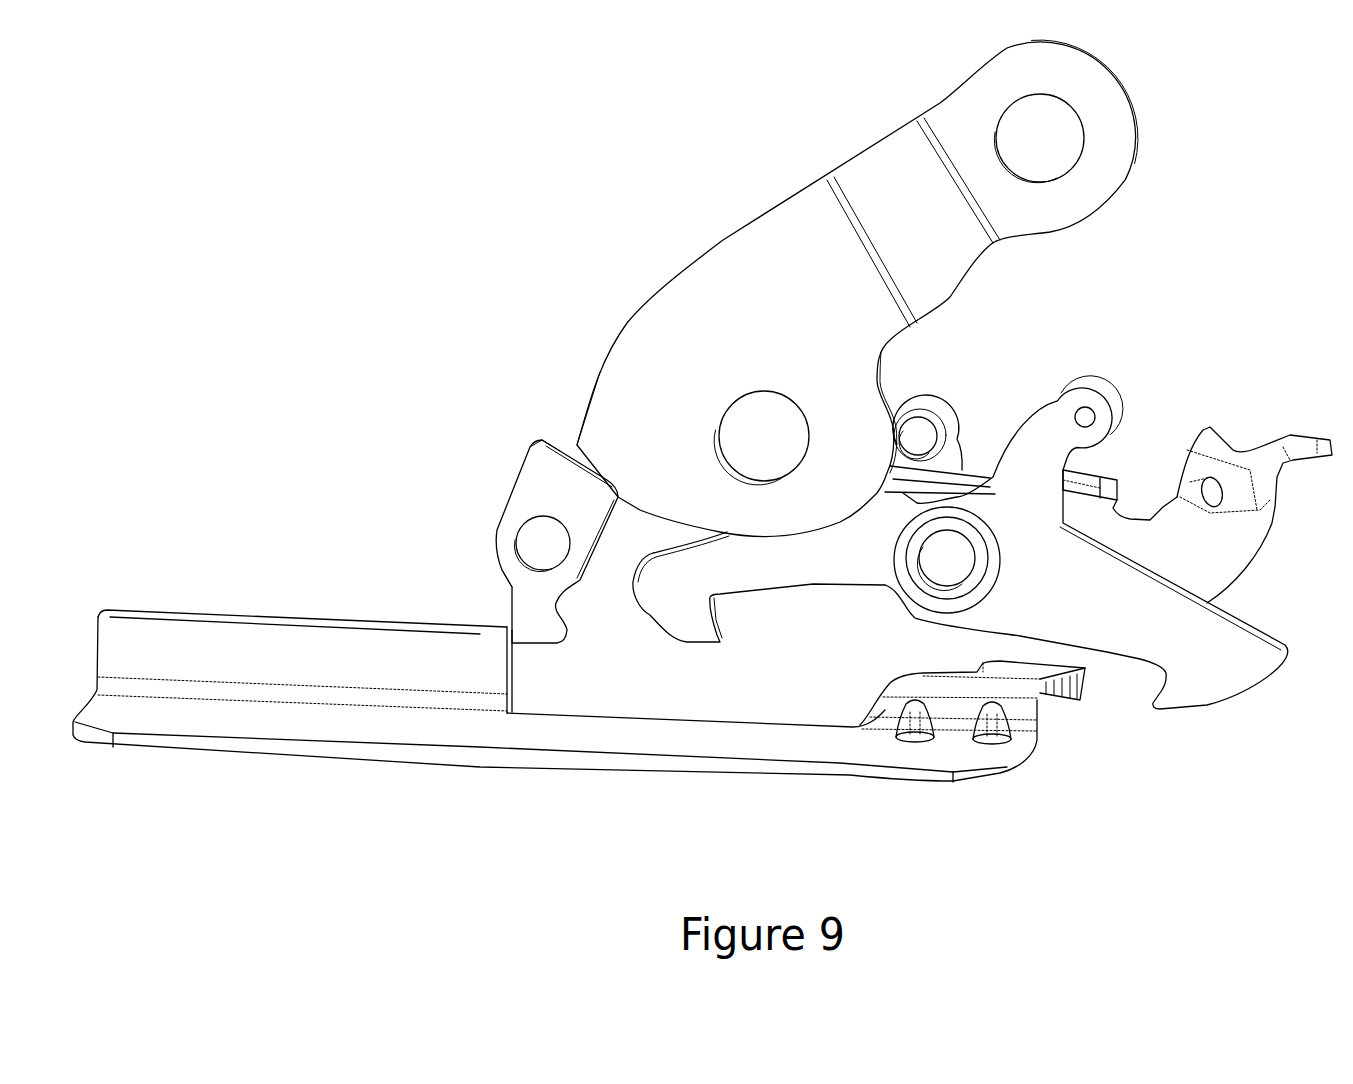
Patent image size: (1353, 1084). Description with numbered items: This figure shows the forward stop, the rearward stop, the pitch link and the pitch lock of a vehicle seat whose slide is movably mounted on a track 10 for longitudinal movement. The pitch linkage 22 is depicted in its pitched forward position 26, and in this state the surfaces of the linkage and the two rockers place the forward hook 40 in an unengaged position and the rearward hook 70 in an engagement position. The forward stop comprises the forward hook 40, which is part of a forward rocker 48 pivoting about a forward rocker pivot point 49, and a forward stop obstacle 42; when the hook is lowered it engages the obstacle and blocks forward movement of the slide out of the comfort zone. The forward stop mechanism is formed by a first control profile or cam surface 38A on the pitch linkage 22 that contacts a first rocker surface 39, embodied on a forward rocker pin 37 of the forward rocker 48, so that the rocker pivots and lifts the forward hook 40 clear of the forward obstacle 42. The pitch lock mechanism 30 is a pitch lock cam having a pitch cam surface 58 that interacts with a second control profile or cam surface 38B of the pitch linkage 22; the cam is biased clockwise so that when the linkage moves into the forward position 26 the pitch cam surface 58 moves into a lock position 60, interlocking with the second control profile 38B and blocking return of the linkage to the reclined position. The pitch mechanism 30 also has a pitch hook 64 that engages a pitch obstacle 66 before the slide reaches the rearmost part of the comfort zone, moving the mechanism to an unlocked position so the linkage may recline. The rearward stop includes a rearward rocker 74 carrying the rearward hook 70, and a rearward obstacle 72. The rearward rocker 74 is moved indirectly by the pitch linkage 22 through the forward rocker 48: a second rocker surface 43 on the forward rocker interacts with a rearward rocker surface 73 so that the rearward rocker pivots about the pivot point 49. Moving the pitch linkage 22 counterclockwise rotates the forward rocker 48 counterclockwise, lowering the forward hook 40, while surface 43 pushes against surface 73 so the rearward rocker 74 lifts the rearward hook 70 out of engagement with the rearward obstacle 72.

The track 10 is at (320, 673).
The pitch linkage 22 is at (789, 331).
The forward position 26 is at (1160, 103).
The pitch lock mechanism 30 is at (574, 506).
The forward rocker pin 37 is at (950, 455).
The first control profile cam surface 38A is at (897, 440).
The second control profile cam surface 38B is at (589, 450).
The first rocker surface 39 is at (912, 420).
The forward stop hook 40 is at (680, 603).
The forward stop obstacle 42 is at (983, 663).
The second rocker surface 43 is at (1078, 487).
The forward rocker 48 is at (857, 571).
The forward rocker pivot point 49 is at (940, 560).
The pitch cam surface 58 is at (553, 440).
The lock position 60 is at (503, 340).
The pitch hook 64 is at (510, 603).
The pitch obstacle 66 is at (513, 677).
The rearward hook 70 is at (1213, 655).
The rearward obstacle 72 is at (1083, 673).
The rearward rocker surface 73 is at (1062, 387).
The rearward rocker 74 is at (1080, 603).